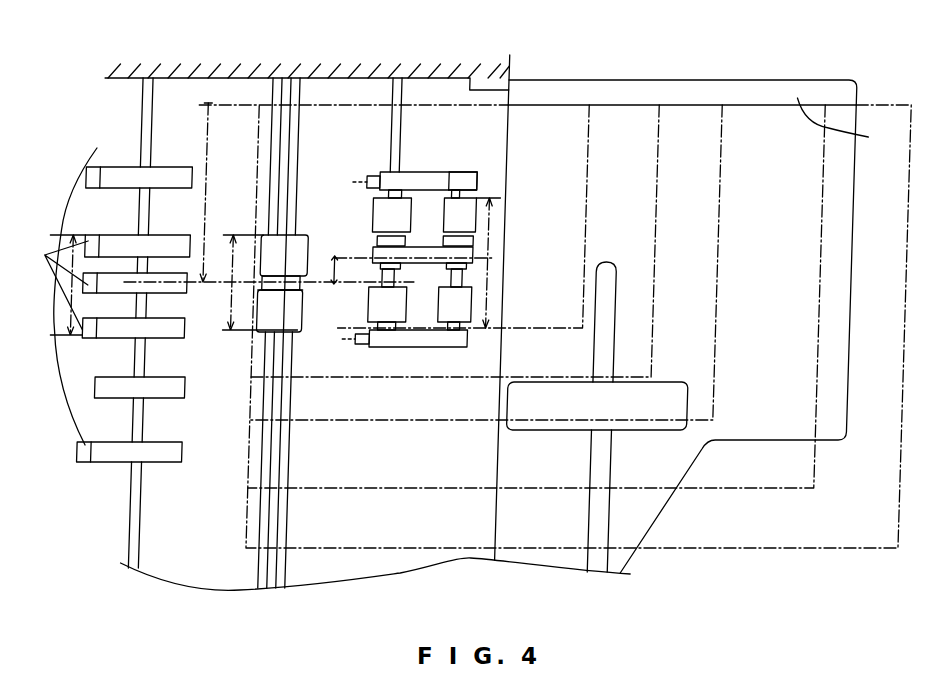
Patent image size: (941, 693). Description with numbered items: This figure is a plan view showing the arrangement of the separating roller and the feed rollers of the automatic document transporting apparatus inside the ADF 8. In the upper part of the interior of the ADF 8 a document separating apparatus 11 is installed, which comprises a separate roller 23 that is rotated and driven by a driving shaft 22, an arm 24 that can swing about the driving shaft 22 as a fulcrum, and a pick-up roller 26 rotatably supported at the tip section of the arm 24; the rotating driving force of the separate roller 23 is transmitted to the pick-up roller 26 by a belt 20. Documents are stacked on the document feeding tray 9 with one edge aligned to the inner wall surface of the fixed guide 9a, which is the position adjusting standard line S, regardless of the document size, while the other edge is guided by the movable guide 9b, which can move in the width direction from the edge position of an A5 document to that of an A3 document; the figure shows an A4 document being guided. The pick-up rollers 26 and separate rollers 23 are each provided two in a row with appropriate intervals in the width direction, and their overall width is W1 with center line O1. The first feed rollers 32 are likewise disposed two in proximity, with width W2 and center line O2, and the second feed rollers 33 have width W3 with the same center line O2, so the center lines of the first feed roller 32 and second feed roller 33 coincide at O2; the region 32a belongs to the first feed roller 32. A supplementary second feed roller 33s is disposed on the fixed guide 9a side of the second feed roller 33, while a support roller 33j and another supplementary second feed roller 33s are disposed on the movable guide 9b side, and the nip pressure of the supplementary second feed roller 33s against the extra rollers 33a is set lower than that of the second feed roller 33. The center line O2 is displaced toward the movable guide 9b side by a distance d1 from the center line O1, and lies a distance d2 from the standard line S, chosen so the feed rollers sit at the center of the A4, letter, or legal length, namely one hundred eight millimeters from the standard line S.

The ADF 8 is at (444, 62).
The document feeding tray 9 is at (613, 77).
The fixed guide 9a is at (847, 122).
The movable guide 9b is at (659, 432).
The document separating apparatus 11 is at (413, 259).
The belt 20 is at (427, 262).
The driving shaft 22 is at (401, 115).
The separate roller 23 is at (412, 225).
The arm 24 is at (422, 172).
The pick-up roller 26 is at (453, 172).
The first feed roller 32 is at (315, 305).
The guide block lower face 32a is at (267, 250).
The second feed roller 33 is at (121, 323).
The extra roller 33a is at (101, 314).
The support roller 33j is at (167, 393).
The supplementary second feed roller 33s is at (120, 188).
The width measurement W1 is at (495, 248).
The width measurement W2 is at (241, 238).
The width measurement W3 is at (81, 283).
The distance d1 is at (350, 270).
The distance d2 is at (205, 130).
The center line O1 is at (348, 256).
The center line O2 is at (304, 263).
The position adjusting standard line S is at (767, 107).